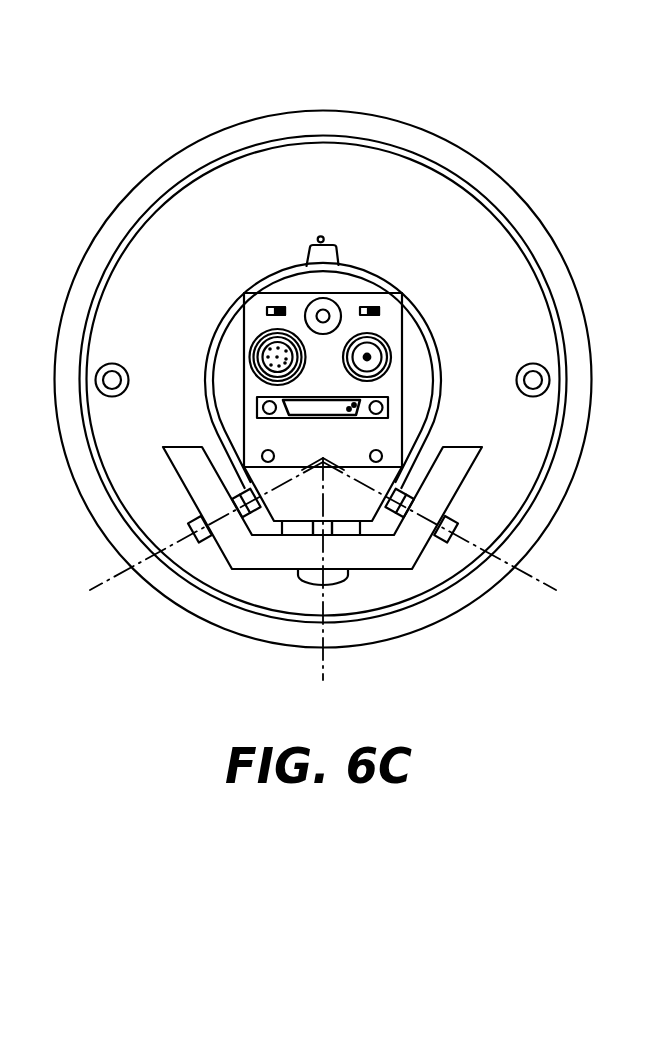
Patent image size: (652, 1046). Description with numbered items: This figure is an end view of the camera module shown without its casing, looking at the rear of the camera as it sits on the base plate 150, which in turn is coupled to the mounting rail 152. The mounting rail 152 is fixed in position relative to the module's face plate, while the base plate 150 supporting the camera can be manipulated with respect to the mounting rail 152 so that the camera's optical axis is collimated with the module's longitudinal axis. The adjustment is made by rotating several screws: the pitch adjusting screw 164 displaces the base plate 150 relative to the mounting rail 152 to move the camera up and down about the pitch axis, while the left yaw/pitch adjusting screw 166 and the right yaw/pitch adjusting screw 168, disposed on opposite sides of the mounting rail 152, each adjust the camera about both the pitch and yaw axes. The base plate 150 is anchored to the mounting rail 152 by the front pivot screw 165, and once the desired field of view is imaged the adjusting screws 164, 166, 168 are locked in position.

The base plate 150 is at (296, 484).
The mounting rail 152 is at (455, 473).
The pitch adjusting screw 164 is at (384, 630).
The front pivot screw 165 is at (330, 586).
The left yaw/pitch adjusting screw 166 is at (200, 545).
The right yaw/pitch adjusting screw 168 is at (443, 547).